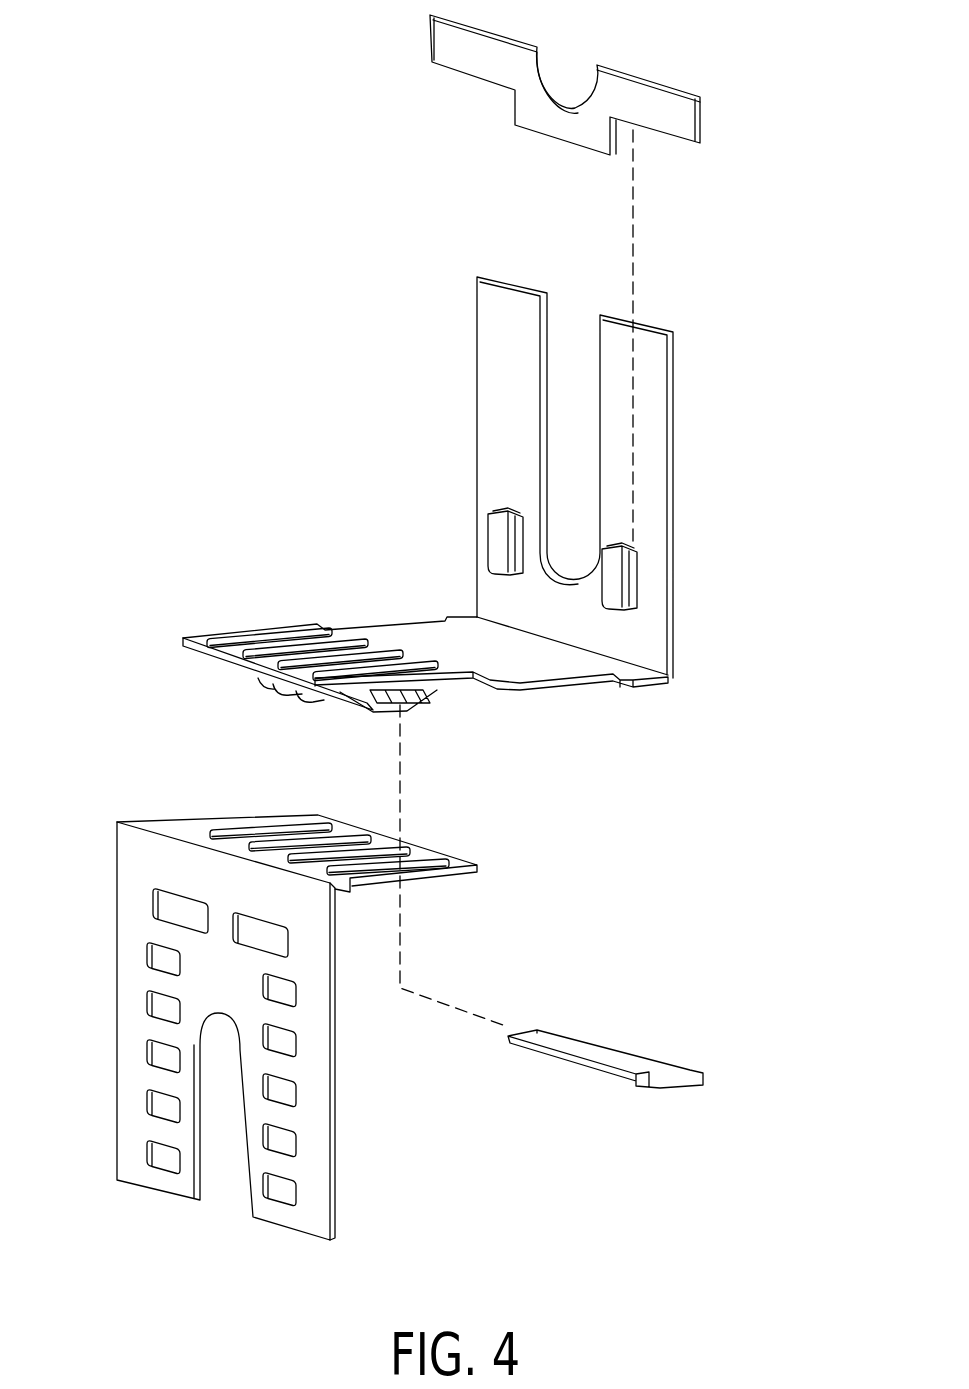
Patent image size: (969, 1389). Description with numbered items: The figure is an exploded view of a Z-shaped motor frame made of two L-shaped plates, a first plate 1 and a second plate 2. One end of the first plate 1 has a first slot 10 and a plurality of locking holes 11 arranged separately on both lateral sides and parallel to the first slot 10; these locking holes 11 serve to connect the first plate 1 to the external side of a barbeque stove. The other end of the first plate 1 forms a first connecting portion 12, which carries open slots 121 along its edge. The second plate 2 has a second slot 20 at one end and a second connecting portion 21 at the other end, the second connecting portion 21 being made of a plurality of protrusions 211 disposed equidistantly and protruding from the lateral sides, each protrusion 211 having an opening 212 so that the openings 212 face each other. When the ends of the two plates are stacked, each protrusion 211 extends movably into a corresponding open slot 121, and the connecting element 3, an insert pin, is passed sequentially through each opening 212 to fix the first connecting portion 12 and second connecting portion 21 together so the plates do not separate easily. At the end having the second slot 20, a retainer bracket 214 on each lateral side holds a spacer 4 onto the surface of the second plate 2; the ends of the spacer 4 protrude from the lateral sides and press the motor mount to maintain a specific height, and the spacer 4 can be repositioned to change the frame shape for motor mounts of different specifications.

The first plate 1 is at (256, 1025).
The first slot 10 is at (233, 1200).
The locking holes 11 is at (293, 1193).
The first connecting portion 12 is at (297, 822).
The open slot 121 is at (433, 860).
The second plate 2 is at (381, 494).
The second slot 20 is at (531, 433).
The second connecting portion 21 is at (264, 714).
The protrusions 211 is at (318, 681).
The opening 212 is at (392, 688).
The retainer bracket 214 is at (498, 538).
The connecting element 3 is at (670, 1084).
The spacer 4 is at (655, 92).